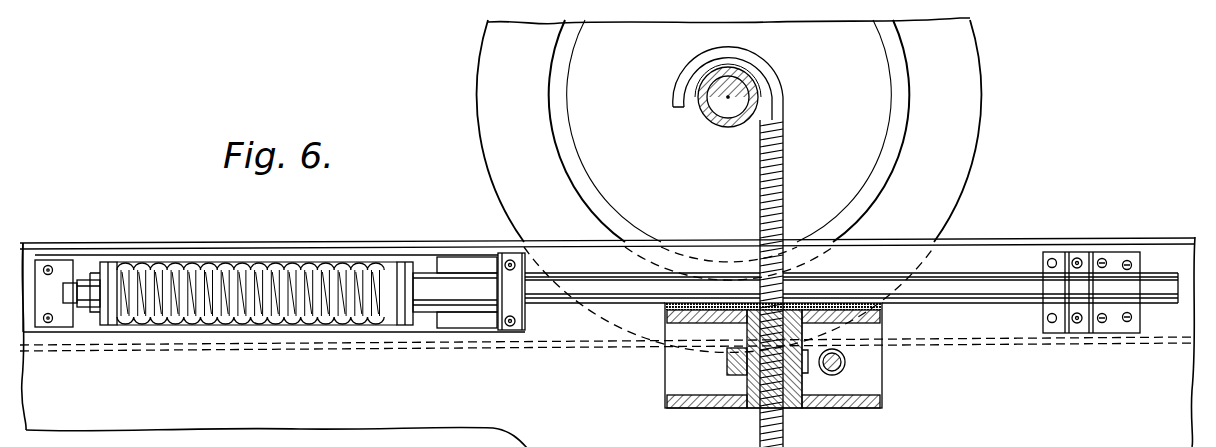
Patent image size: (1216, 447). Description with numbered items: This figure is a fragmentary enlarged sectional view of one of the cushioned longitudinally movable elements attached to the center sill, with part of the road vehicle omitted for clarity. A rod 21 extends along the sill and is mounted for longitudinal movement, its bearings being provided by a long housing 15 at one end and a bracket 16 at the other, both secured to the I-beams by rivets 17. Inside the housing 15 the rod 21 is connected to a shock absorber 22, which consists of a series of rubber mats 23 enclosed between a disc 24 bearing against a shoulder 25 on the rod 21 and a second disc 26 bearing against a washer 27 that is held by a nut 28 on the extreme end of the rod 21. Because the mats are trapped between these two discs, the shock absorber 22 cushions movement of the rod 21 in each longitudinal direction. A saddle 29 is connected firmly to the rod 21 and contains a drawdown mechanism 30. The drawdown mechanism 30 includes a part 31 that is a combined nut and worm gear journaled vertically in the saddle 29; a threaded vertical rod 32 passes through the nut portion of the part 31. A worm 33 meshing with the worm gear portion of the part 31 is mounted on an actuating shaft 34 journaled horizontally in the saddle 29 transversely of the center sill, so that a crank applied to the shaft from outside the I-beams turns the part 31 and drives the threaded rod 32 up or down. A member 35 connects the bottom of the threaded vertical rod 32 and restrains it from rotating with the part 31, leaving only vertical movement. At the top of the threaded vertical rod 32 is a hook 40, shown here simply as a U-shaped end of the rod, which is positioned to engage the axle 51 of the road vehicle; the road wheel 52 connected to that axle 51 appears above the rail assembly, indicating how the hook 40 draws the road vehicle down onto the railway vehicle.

The housing 15 is at (265, 331).
The bracket 16 is at (1103, 334).
The rivets 17 is at (1126, 262).
The rod 21 is at (587, 312).
The shock absorber 22 is at (270, 262).
The rubber mats 23 is at (358, 315).
The disc 24 is at (408, 263).
The shoulder 25 is at (412, 296).
The disc 26 is at (110, 316).
The washer 27 is at (92, 270).
The nut 28 is at (88, 303).
The saddle 29 is at (665, 401).
The drawdown mechanism 30 is at (690, 369).
The part 31 is at (807, 382).
The threaded vertical rod 32 is at (784, 226).
The worm 33 is at (846, 359).
The actuating shaft 34 is at (852, 368).
The member 35 is at (719, 443).
The hook 40 is at (683, 100).
The axle 51 is at (727, 126).
The road wheel 52 is at (950, 183).